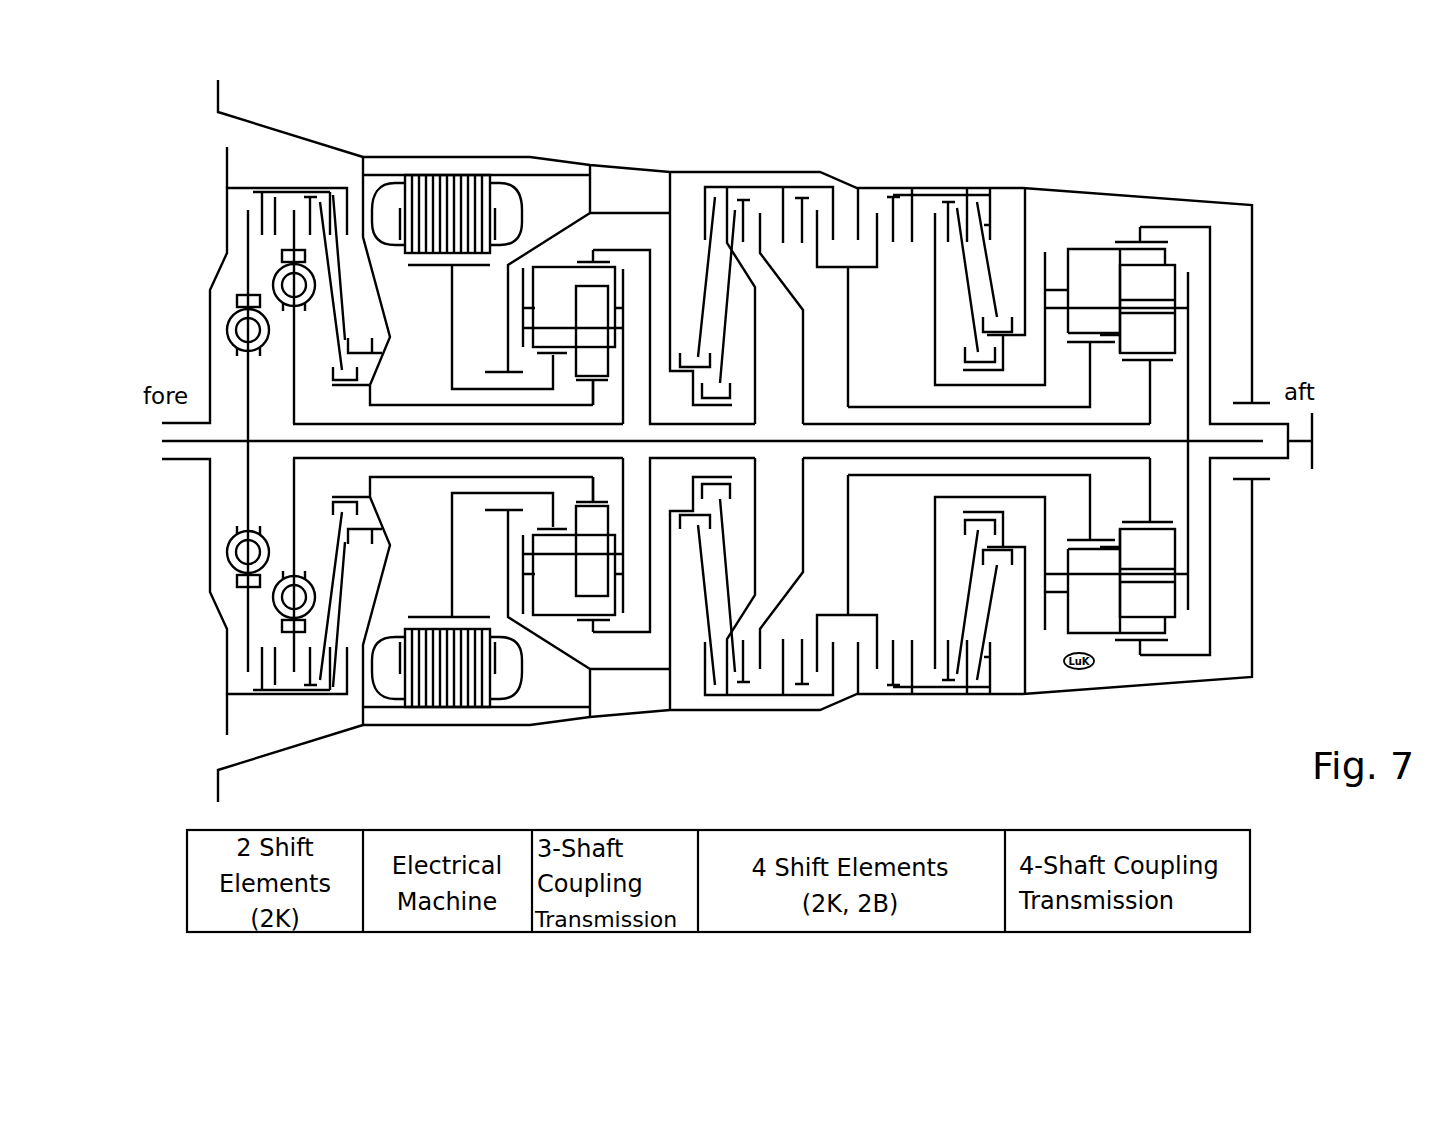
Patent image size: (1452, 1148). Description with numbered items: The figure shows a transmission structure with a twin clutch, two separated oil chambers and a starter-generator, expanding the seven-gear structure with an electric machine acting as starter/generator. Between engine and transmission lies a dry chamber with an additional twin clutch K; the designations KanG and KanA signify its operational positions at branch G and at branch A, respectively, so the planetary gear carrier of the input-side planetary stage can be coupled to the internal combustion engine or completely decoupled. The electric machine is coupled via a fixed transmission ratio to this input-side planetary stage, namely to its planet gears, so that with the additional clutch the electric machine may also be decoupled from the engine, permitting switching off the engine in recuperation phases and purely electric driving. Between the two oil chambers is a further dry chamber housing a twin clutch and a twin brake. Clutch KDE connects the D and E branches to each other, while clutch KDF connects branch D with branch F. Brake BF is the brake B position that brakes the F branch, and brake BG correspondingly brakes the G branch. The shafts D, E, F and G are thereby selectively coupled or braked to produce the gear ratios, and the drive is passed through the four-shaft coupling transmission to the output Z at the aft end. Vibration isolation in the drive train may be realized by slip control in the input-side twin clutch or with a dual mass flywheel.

The operational position of twin clutch K at branch A KanA is at (290, 438).
The operational position of twin clutch K at branch G KanG is at (187, 435).
The branch A is at (573, 441).
The brake B is at (491, 441).
The shaft C of 3-shaft coupling transmission C is at (537, 441).
The branch D is at (674, 441).
The clutch KDE is at (720, 390).
The clutch KDF is at (796, 415).
The brake BF is at (847, 379).
The brake BG is at (966, 415).
The branch G is at (1115, 438).
The branch F is at (981, 441).
The branch E is at (1145, 441).
The output shaft Z is at (1214, 441).